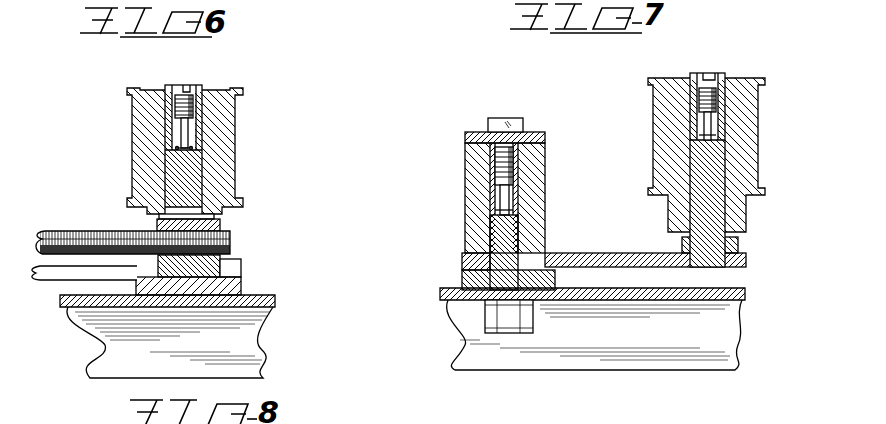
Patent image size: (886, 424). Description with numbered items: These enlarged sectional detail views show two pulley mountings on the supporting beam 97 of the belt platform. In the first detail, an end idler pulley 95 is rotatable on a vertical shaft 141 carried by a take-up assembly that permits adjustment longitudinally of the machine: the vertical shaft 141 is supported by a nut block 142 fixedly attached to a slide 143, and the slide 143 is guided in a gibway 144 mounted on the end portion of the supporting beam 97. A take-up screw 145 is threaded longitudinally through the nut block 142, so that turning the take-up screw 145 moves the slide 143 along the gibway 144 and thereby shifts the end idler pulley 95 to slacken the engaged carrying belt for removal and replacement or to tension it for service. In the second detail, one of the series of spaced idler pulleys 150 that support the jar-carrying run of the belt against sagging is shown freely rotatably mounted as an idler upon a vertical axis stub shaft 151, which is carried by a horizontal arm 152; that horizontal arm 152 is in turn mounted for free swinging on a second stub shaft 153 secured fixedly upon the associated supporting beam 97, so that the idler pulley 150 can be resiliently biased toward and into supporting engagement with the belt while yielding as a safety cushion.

In FIG. 6, the end idler pulley 95 is at (242, 155).
In FIG. 6, the vertical shaft 141 is at (195, 183).
In FIG. 6, the nut block 142 is at (212, 262).
In FIG. 6, the slide 143 is at (230, 284).
In FIG. 6, the gibway 144 is at (62, 273).
In FIG. 6, the take-up screw 145 is at (67, 230).
In FIG. 6, the supporting beam 97 is at (240, 352).
In FIG. 7, the supporting beam 97 is at (738, 302).
In FIG. 7, the idler pulley 150 is at (753, 121).
In FIG. 7, the stub shaft 151 is at (718, 188).
In FIG. 7, the horizontal arm 152 is at (605, 253).
In FIG. 7, the stub shaft 153 is at (503, 234).